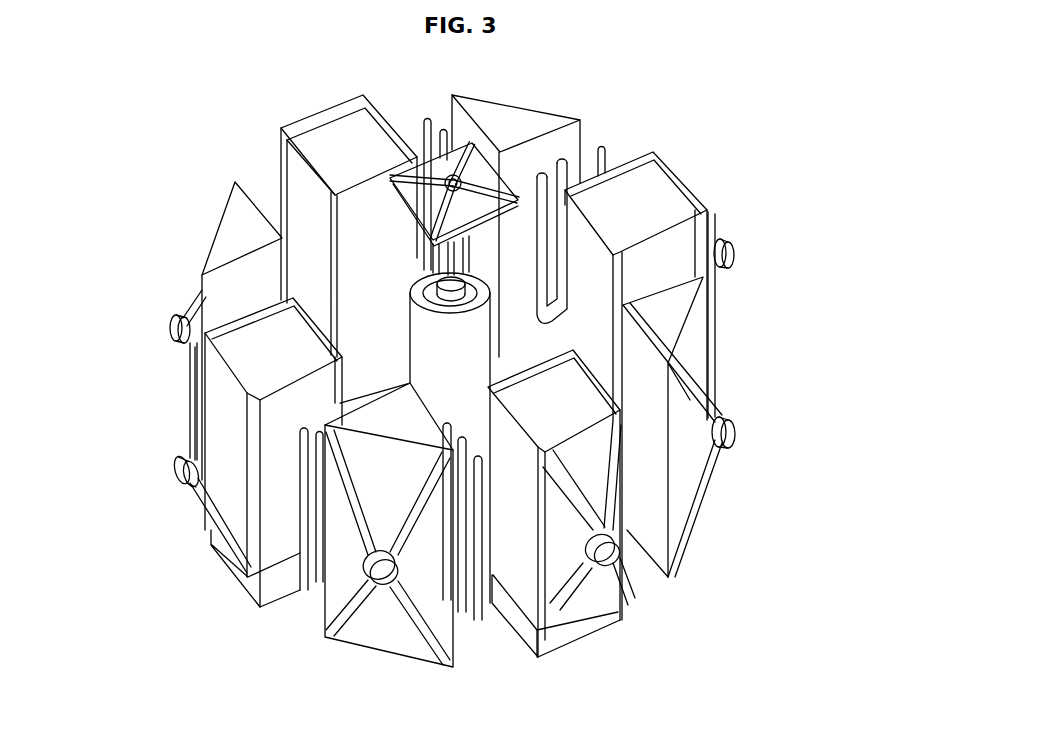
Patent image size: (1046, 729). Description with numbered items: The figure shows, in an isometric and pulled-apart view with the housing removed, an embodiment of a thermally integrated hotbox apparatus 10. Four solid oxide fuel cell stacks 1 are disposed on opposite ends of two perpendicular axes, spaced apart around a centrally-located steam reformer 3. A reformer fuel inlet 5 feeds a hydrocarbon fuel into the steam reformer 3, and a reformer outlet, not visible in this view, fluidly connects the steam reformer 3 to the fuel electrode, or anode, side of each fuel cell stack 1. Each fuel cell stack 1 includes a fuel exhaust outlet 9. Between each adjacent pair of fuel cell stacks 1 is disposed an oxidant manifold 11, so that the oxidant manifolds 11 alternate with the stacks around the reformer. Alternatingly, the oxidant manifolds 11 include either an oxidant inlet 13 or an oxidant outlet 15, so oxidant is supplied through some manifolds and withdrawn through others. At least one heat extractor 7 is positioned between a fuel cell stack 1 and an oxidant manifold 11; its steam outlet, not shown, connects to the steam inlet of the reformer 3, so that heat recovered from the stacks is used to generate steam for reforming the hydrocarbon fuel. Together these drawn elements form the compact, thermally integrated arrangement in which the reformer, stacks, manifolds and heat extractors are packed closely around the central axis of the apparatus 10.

The solid oxide fuel cell stack 1 is at (310, 110).
The steam reformer 3 is at (462, 287).
The reformer fuel inlet 5 is at (417, 152).
The heat extractor 7 is at (427, 118).
The fuel exhaust outlet 9 is at (730, 247).
The modular assembly 10 is at (720, 88).
The oxidant manifold 11 is at (223, 203).
The oxidant inlet 13 is at (172, 325).
The oxidant outlet 15 is at (382, 590).